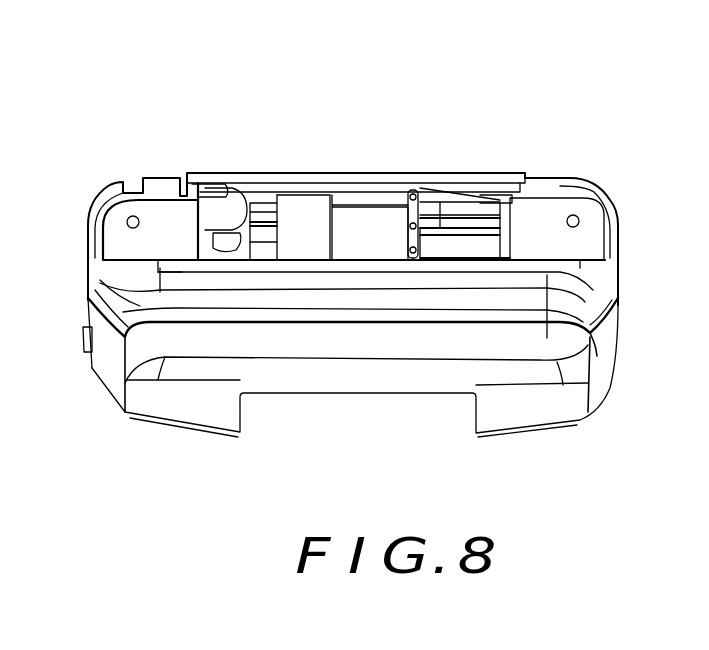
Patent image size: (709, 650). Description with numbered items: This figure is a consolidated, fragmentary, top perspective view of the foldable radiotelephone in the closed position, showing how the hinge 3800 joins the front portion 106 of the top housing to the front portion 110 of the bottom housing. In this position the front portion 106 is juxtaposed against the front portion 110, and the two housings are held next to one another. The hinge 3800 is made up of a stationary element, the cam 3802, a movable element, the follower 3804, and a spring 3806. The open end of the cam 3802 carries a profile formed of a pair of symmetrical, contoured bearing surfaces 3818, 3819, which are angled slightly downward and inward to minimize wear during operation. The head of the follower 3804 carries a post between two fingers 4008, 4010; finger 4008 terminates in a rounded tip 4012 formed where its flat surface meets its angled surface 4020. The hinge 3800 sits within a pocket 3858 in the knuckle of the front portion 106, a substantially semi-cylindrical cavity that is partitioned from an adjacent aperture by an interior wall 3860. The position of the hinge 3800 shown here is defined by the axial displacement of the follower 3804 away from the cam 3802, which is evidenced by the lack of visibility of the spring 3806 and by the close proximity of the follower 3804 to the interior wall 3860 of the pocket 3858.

The hinge 3800 is at (433, 168).
The cam 3802 is at (233, 190).
The bearing surface 3818 is at (250, 228).
The rounded tip 4012 is at (230, 195).
The finger 4010 is at (268, 208).
The finger 4008 is at (240, 223).
The angled surface 4020 is at (265, 230).
The bearing surface 3819 is at (233, 252).
The follower 3804 is at (343, 215).
The pocket 3858 is at (408, 195).
The spring 3806 is at (410, 235).
The interior wall 3860 is at (413, 252).
The front portion 106 is at (590, 295).
The front portion 110 is at (607, 325).